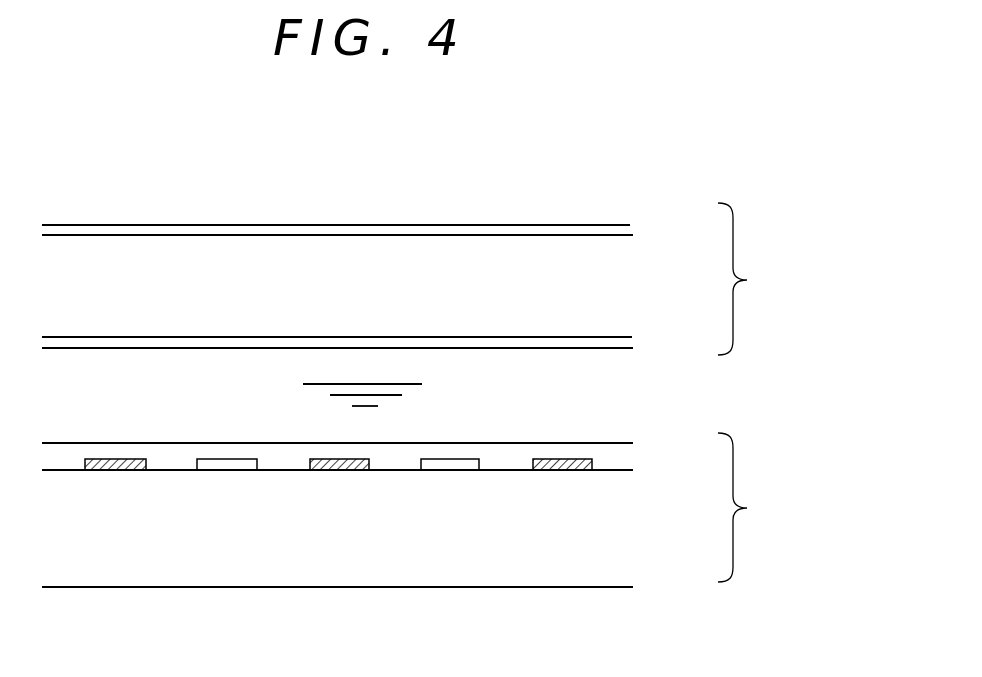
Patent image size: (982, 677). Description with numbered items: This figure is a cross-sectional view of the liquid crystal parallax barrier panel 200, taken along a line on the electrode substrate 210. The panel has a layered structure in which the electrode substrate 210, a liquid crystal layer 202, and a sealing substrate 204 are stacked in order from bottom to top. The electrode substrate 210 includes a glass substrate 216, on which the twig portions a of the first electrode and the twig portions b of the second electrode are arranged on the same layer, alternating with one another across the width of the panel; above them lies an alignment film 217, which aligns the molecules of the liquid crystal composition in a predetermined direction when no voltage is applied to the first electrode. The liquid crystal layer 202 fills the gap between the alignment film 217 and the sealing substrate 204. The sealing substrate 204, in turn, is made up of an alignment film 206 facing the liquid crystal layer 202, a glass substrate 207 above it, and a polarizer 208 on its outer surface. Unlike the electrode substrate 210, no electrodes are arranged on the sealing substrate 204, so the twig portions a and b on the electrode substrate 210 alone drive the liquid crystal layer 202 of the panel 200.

The liquid crystal parallax barrier panel 200 is at (343, 188).
The sealing substrate 204 is at (759, 279).
The polarizer 208 is at (634, 230).
The glass substrate 207 is at (615, 285).
The alignment film 206 is at (634, 345).
The liquid crystal layer 202 is at (620, 400).
The electrode substrate 210 is at (759, 507).
The alignment film 217 is at (628, 457).
The glass substrate 216 is at (627, 518).
The twig portions of the first electrode a is at (112, 472).
The twig portions of the second electrode b is at (225, 472).